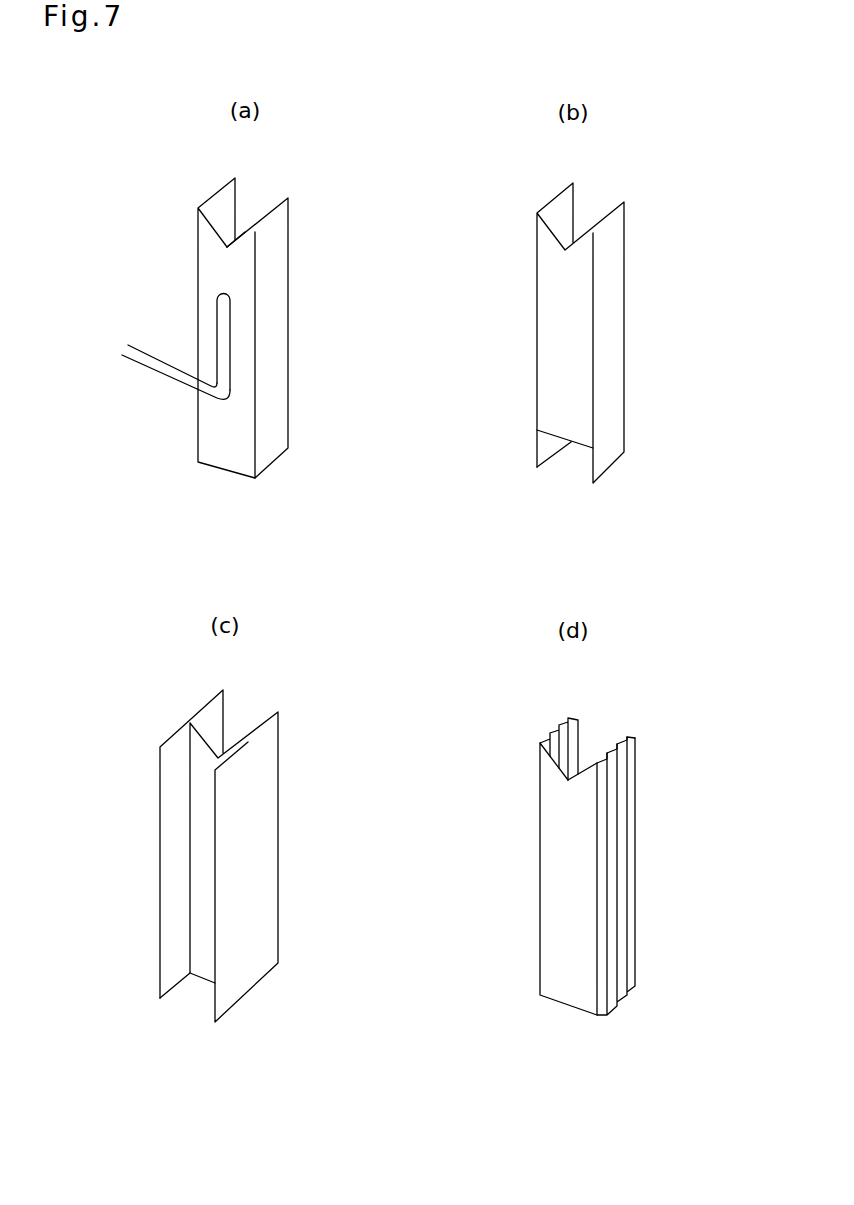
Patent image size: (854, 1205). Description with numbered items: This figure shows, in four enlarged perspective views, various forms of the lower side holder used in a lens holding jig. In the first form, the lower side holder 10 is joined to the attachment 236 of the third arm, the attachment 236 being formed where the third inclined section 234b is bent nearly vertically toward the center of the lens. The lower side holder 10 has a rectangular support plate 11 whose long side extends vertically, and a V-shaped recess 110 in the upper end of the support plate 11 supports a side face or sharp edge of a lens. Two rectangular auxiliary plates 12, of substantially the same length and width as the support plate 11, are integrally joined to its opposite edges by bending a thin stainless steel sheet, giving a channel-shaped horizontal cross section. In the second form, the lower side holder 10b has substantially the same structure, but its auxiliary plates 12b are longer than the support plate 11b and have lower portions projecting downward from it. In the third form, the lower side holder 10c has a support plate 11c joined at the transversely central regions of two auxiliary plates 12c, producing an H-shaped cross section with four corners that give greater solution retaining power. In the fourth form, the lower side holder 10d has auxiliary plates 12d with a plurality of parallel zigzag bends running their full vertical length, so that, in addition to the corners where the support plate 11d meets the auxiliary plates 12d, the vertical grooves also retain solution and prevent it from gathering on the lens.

The lower side holder 10 is at (231, 331).
The support plate 11 is at (225, 457).
The auxiliary plates 12 is at (278, 350).
The V-shaped recess 110 is at (245, 227).
The attachment 236 is at (217, 307).
The third inclined section 234b is at (148, 372).
The lower side holder 10b is at (612, 340).
The support plate 11b is at (577, 428).
The auxiliary plates 12b is at (553, 208).
The lower side holder 10c is at (236, 874).
The support plate 11c is at (205, 968).
The auxiliary plates 12c is at (168, 862).
The lower side holder 10d is at (632, 896).
The support plate 11d is at (572, 993).
The auxiliary plates 12d is at (627, 888).